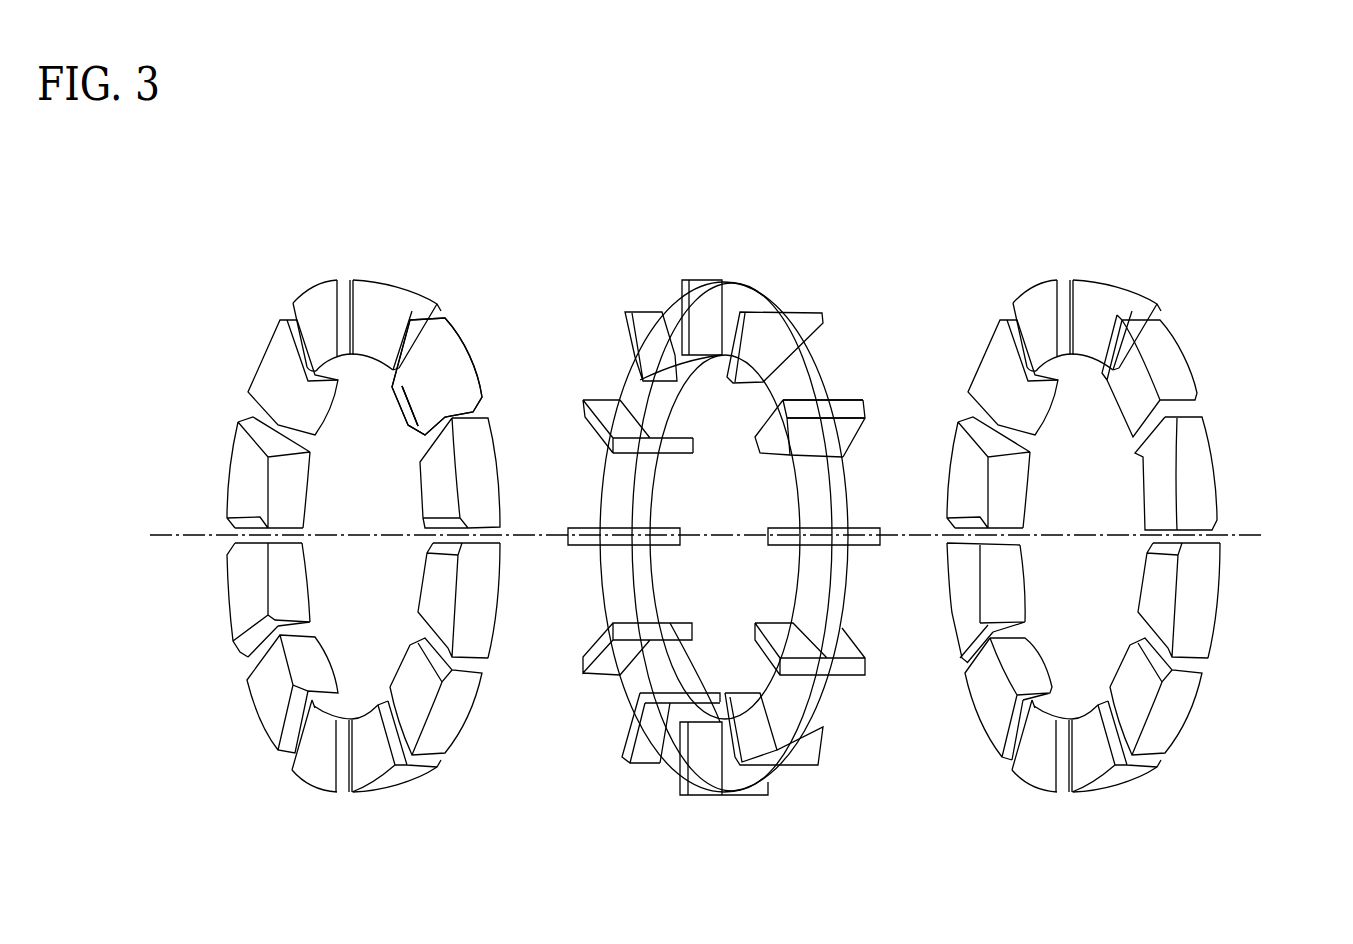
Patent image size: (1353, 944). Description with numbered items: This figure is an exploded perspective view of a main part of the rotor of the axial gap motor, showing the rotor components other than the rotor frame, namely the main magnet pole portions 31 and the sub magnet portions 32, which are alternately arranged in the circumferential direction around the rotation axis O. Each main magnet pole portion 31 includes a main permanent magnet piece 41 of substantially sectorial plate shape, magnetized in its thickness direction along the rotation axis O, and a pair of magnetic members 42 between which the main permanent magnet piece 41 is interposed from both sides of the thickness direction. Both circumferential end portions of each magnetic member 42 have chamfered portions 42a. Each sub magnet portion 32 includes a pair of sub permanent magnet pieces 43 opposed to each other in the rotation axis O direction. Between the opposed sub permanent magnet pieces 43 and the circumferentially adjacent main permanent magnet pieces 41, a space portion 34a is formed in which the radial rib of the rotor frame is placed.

The main magnet pole portion 31 is at (283, 262).
The sub magnet portion 32 is at (752, 505).
The space portion 34a is at (820, 407).
The main permanent magnet piece 41 is at (818, 375).
The magnetic member 42 is at (457, 340).
The chamfered portion 42a is at (424, 413).
The sub permanent magnet piece 43 is at (803, 312).
The rotation axis O is at (168, 540).